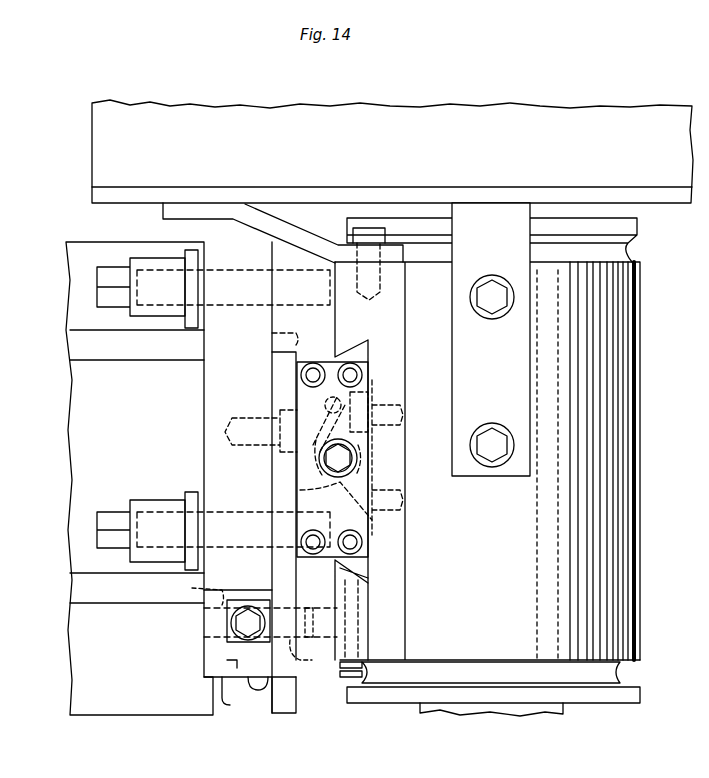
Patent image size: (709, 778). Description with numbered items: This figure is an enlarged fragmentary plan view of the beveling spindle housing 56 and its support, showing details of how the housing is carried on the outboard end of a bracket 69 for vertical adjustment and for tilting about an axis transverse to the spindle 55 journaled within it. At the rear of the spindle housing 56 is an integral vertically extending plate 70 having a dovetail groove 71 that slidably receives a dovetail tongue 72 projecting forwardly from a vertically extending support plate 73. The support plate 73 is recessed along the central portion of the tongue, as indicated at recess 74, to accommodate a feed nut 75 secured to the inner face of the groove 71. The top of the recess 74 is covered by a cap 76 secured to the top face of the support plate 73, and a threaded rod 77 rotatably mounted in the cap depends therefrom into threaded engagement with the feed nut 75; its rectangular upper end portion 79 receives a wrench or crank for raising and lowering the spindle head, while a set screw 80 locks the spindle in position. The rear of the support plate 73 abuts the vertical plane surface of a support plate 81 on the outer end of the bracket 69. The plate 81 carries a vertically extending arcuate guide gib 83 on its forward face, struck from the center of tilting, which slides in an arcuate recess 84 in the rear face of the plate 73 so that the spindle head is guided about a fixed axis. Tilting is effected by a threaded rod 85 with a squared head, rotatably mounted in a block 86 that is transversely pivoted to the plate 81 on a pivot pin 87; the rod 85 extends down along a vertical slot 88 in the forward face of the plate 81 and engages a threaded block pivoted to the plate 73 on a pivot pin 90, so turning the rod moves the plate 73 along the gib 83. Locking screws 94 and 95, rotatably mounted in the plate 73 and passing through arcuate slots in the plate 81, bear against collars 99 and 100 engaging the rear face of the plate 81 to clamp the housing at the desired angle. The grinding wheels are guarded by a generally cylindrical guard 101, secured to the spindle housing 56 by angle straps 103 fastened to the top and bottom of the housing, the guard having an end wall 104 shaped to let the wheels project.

The end wall 104 is at (92, 192).
The guard 101 is at (688, 205).
The bracket 69 is at (153, 713).
The locking screw 94 is at (115, 275).
The collar 99 is at (165, 312).
The locking screw 95 is at (127, 507).
The collar 100 is at (168, 500).
The arcuate guide gib 83 is at (285, 358).
The arcuate recess 84 is at (298, 340).
The block 86 is at (243, 595).
The threaded rod 85 is at (240, 622).
The pivot pin 87 is at (195, 592).
The vertical slot 88 is at (235, 663).
The pivot pin 90 is at (311, 655).
The support plate 81 is at (230, 705).
The support plate 73 is at (300, 672).
The cap 76 is at (305, 520).
The threaded rod 77 is at (345, 457).
The rectangular upper end portion 79 is at (350, 468).
The recess 74 is at (327, 405).
The feed nut 75 is at (315, 495).
The dovetail groove 71 is at (365, 572).
The dovetail tongue 72 is at (366, 588).
The plate 70 is at (392, 634).
The spindle housing 56 is at (645, 650).
The angle strap 103 is at (452, 343).
The spindle 55 is at (447, 712).
The set screw 80 is at (345, 684).